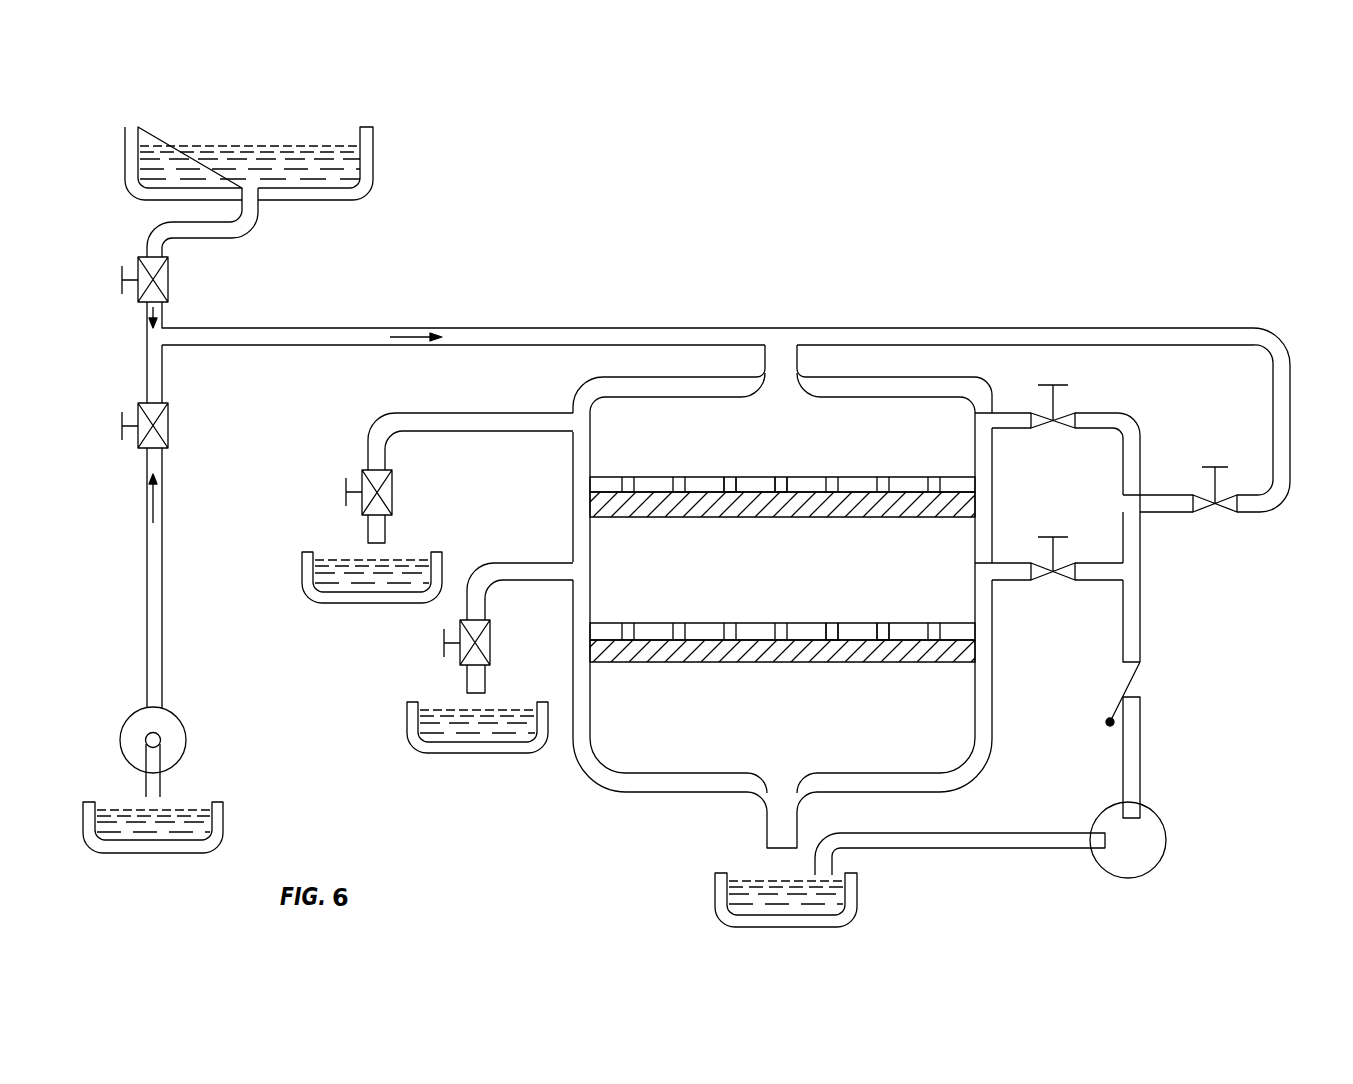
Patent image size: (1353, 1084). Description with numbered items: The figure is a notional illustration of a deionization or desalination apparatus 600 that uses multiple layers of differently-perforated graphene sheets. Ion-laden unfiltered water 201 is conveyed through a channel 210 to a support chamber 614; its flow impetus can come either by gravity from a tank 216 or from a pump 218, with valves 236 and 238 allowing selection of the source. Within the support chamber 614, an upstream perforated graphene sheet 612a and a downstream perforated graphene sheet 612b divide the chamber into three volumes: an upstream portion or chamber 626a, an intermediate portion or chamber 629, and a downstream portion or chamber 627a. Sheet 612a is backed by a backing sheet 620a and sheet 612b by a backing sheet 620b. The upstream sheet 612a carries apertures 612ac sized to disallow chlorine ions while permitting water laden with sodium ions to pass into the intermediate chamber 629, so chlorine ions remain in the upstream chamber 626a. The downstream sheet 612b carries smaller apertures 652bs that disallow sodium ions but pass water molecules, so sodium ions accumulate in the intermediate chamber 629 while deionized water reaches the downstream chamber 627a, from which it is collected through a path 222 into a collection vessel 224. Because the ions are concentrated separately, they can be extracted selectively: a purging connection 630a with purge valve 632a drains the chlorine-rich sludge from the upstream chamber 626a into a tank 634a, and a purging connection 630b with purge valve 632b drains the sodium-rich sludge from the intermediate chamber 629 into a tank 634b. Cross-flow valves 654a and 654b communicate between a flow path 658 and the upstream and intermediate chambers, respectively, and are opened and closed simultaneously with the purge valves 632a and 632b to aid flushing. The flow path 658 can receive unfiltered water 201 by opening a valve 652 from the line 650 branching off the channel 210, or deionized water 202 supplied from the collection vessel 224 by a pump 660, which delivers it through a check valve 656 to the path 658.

The deionization or desalination apparatus 600 is at (493, 870).
The unfiltered water 201 is at (257, 146).
The tank 216 is at (330, 200).
The valve 238 is at (168, 276).
The channel 210 is at (230, 345).
The valve 236 is at (168, 427).
The pump 218 is at (184, 727).
The support chamber 614 is at (916, 378).
The bypass conduit 650 is at (1105, 345).
The upstream portion or chamber 626a is at (806, 422).
The upstream perforated graphene sheet 612a is at (655, 478).
The apertures 612ac is at (782, 483).
The backing sheet 620a is at (708, 518).
The purging connection 630a is at (513, 432).
The purge valve 632a is at (392, 497).
The tank 634a is at (390, 605).
The cross-flow valve 654a is at (1068, 429).
The cross-flow valve 654b is at (1037, 581).
The valve 652 is at (1233, 513).
The intermediate portion or chamber 629 is at (794, 597).
The downstream perforated graphene sheet 612b is at (648, 622).
The apertures 652bs is at (885, 625).
The backing sheet 620b is at (712, 663).
The purging connection 630b is at (547, 582).
The purge valve 632b is at (467, 665).
The tank 634b is at (483, 755).
The downstream portion or chamber 627a is at (801, 716).
The path 222 is at (765, 828).
The deionized water 202 is at (750, 880).
The collection vessel 224 is at (858, 900).
The flow path 658 is at (1142, 607).
The check valve 656 is at (1138, 677).
The pump 660 is at (1168, 838).